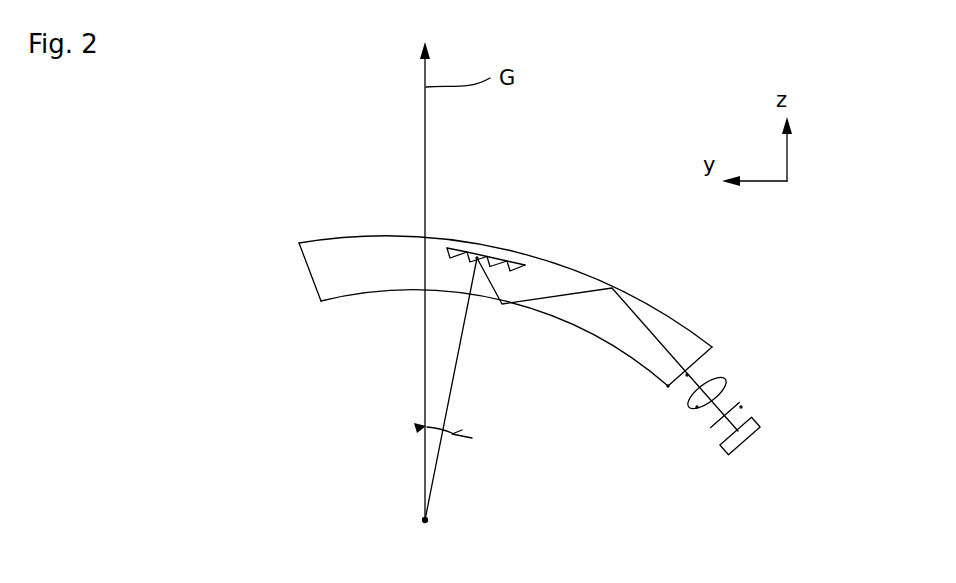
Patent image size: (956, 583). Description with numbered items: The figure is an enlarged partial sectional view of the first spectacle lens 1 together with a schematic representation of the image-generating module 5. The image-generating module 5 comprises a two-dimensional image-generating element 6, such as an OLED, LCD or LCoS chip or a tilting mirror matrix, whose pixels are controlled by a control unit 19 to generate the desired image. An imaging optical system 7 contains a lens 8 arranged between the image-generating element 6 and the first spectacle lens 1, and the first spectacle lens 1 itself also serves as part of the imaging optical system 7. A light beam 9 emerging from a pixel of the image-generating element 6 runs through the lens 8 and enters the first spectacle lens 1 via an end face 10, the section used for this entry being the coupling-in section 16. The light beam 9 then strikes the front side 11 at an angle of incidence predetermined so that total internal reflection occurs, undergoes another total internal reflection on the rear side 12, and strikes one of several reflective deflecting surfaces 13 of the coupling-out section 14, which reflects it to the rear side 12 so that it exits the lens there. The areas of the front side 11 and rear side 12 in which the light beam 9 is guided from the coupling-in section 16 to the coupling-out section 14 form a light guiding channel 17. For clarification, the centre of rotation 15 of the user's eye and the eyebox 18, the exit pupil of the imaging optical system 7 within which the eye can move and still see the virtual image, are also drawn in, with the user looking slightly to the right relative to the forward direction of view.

The first spectacle lens 1 is at (519, 274).
The image-generating module 5 is at (750, 395).
The image-generating element 6 is at (740, 406).
The imaging optical system 7 is at (734, 372).
The lens 8 is at (697, 408).
The light beam 9 is at (687, 376).
The end face 10 is at (673, 388).
The front side 11 is at (333, 242).
The rear side 12 is at (347, 303).
The reflective deflecting surface 13 is at (522, 255).
The coupling-out section 14 is at (522, 262).
The centre of rotation 15 is at (432, 520).
The coupling-in section 16 is at (716, 357).
The light guiding channel 17 is at (604, 336).
The eyebox 18 is at (419, 428).
The control unit 19 is at (736, 455).